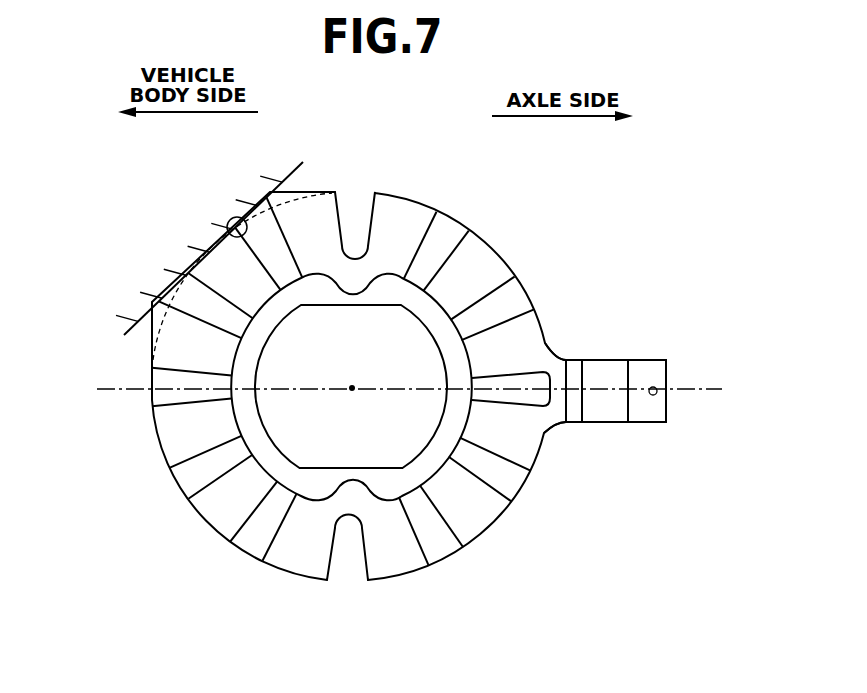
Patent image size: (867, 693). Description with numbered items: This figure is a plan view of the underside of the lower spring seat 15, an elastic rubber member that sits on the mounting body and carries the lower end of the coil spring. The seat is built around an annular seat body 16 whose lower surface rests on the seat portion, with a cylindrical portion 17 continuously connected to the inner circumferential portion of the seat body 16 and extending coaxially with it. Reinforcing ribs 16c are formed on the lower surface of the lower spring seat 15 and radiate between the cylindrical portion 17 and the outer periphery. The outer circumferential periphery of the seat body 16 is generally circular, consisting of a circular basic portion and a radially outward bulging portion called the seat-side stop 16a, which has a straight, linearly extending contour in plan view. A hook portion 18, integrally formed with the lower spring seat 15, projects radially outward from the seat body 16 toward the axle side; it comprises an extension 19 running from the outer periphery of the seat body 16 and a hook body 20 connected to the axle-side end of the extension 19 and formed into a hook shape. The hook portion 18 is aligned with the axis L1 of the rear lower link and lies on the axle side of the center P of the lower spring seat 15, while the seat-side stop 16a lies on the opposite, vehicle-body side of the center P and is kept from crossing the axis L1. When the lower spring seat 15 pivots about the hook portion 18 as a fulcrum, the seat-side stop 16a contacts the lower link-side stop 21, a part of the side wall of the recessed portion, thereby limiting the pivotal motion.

The lower spring seat 15 is at (130, 478).
The annular seat body 16 is at (217, 513).
The seat-side stop 16a is at (177, 277).
The reinforcing ribs 16c is at (575, 417).
The cylindrical portion 17 is at (243, 420).
The hook portion 18 is at (610, 305).
The extension 19 is at (607, 423).
The hook body 20 is at (655, 410).
The lower link-side stop 21 is at (233, 217).
The center of lower spring seat P is at (352, 388).
The axis of rear lower link L1 is at (715, 390).